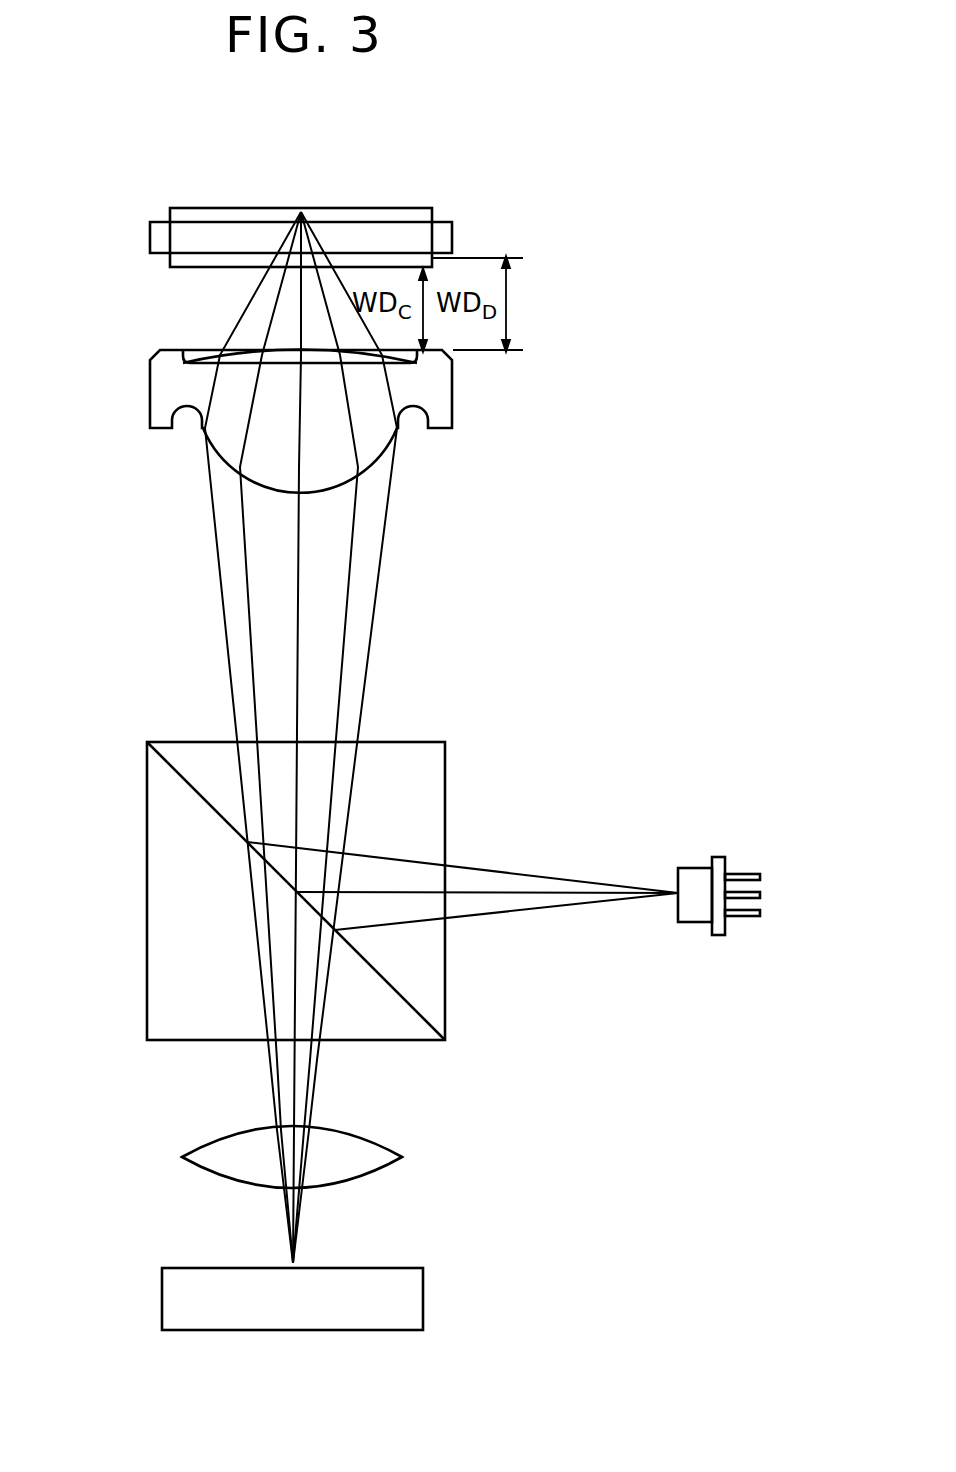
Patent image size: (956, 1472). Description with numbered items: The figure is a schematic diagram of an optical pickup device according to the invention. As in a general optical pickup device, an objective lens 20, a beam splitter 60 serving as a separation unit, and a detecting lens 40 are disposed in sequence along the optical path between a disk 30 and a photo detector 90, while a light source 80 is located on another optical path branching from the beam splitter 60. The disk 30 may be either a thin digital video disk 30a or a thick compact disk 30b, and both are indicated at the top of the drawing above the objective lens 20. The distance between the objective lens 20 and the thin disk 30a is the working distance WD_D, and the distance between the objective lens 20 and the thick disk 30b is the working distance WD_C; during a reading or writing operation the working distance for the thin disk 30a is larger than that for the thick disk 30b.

The objective lens 20 is at (150, 380).
The disk 30 is at (372, 215).
The thin disk 30a is at (455, 228).
The thick disk 30b is at (172, 207).
The detecting lens 40 is at (377, 1139).
The beam splitter 60 is at (150, 905).
The light source 80 is at (745, 868).
The photo detector 90 is at (423, 1305).